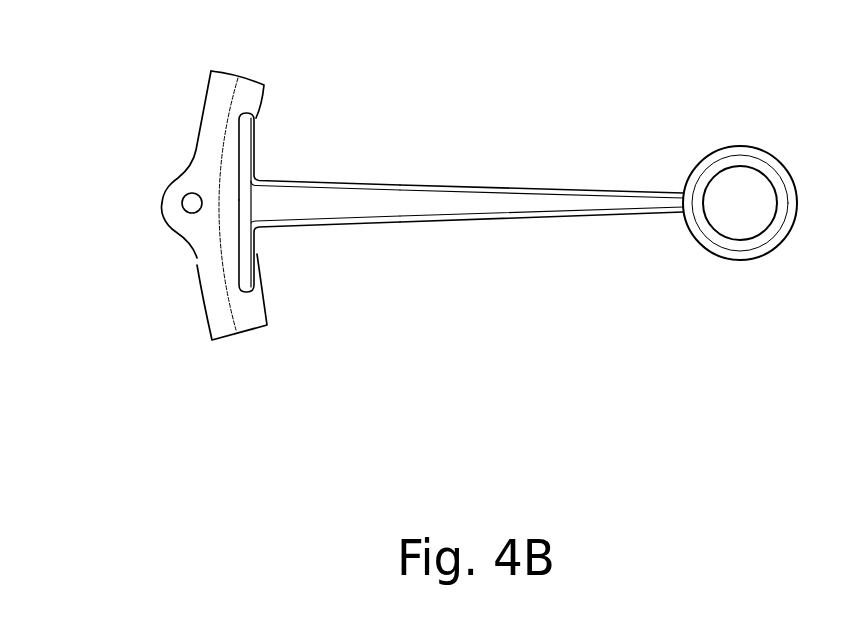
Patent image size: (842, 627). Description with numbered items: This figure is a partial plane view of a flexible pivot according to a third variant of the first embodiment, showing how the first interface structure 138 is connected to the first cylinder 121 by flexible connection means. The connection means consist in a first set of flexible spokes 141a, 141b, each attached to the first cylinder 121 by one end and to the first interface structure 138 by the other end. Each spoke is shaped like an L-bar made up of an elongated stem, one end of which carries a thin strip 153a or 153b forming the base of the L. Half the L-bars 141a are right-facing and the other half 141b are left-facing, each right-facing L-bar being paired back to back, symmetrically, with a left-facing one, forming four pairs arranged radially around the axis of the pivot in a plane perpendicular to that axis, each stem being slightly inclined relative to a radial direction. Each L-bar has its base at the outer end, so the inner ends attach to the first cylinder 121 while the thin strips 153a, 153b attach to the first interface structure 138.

The first interface structure 138 is at (207, 258).
The thin strip 153a is at (254, 258).
The thin strip 153b is at (255, 141).
The right-facing L-bar spoke 141a is at (532, 230).
The left-facing L-bar spoke 141b is at (533, 188).
The first cylinder 121 is at (722, 257).